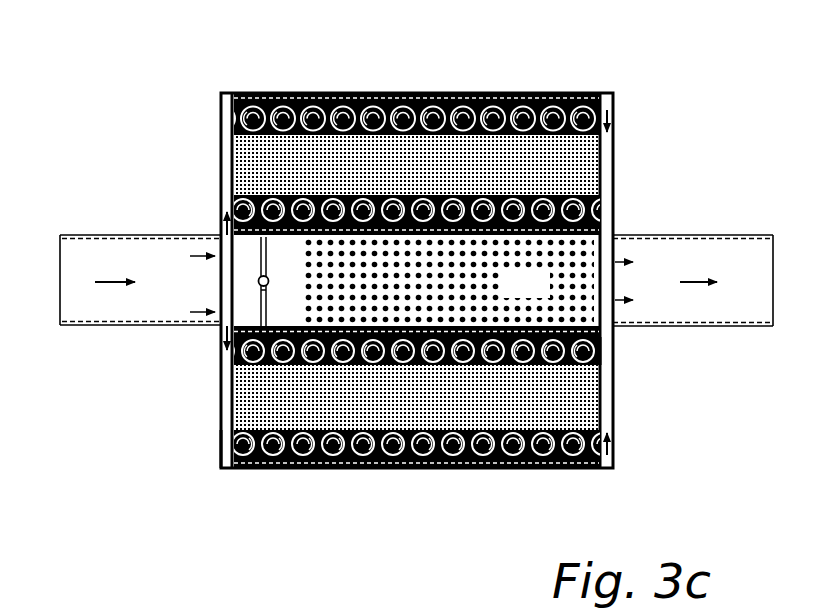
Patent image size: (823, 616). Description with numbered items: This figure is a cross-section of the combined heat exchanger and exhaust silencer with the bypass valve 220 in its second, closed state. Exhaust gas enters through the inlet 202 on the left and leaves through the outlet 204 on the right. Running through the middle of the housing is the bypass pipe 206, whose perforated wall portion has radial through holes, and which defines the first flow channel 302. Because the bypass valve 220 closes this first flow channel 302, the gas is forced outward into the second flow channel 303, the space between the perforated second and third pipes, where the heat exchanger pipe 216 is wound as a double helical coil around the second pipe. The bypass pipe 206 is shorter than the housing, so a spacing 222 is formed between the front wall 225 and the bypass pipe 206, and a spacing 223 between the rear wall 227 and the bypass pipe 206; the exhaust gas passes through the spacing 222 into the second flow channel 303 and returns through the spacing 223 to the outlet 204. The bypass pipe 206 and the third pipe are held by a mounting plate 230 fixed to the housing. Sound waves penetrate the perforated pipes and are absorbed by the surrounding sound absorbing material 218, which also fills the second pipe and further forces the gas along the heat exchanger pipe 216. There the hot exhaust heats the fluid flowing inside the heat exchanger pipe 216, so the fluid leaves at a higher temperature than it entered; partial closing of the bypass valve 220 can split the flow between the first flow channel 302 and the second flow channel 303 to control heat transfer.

The inlet 202 is at (92, 255).
The outlet 204 is at (710, 312).
The bypass pipe 206 is at (283, 270).
The heat exchanger pipe 216 is at (283, 463).
The sound absorbing material 218 is at (590, 398).
The bypass valve 220 is at (263, 298).
The spacing 222 is at (221, 261).
The spacing 223 is at (615, 262).
The front wall 225 is at (215, 441).
The rear wall 227 is at (615, 345).
The mounting plate 230 is at (222, 287).
The first flow channel 302 is at (546, 294).
The second flow channel 303 is at (540, 100).